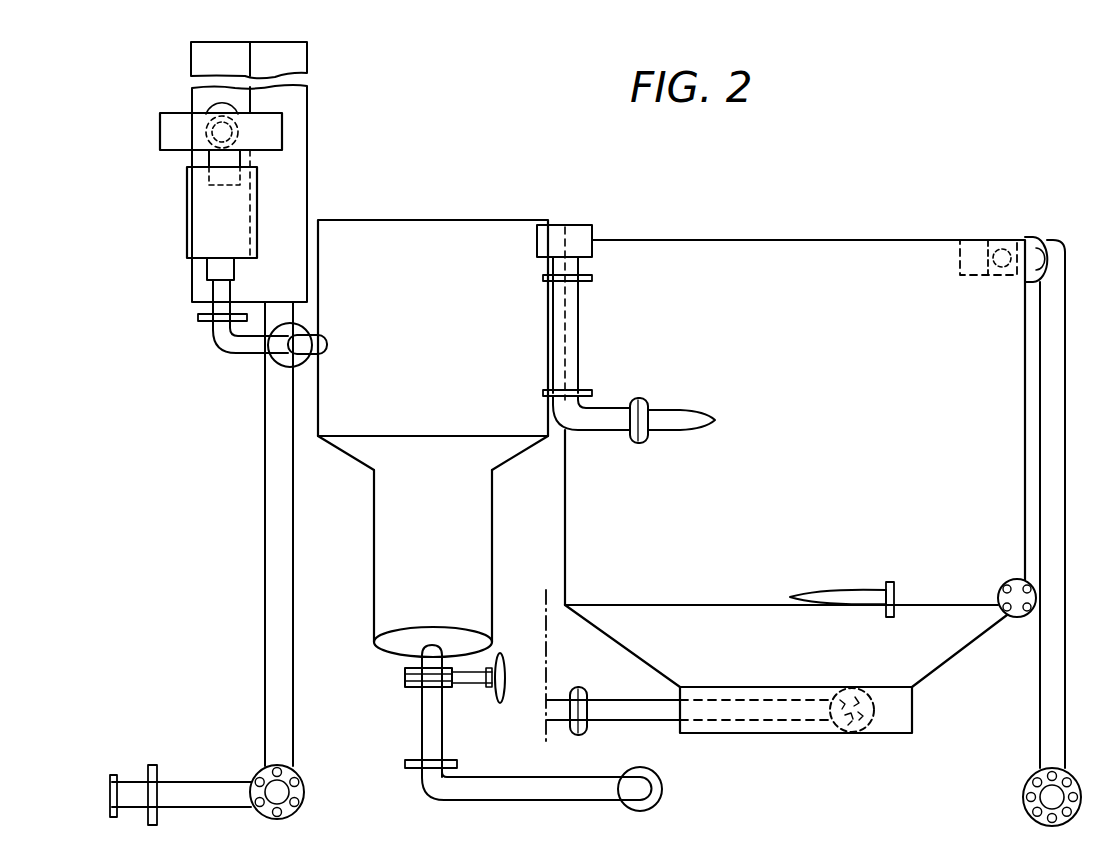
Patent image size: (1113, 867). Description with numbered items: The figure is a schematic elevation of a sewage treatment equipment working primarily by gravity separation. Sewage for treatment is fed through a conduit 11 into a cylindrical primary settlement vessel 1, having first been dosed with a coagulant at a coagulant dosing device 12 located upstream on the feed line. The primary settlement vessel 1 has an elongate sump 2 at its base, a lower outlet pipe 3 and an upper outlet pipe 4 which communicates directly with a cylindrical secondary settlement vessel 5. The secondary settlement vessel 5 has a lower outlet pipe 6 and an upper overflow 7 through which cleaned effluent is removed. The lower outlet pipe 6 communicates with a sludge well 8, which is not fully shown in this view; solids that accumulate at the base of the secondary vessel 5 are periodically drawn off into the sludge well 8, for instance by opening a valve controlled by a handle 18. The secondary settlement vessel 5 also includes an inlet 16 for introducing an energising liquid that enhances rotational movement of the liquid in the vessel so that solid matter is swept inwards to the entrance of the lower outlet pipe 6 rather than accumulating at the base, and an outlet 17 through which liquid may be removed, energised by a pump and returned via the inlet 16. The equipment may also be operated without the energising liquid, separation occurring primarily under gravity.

The primary settlement vessel 1 is at (458, 214).
The sump 2 is at (374, 548).
The lower outlet pipe 3 is at (447, 794).
The upper outlet pipe 4 is at (582, 338).
The secondary settlement vessel 5 is at (843, 236).
The lower outlet pipe 6 is at (657, 712).
The upper overflow 7 is at (1043, 238).
The sludge well 8 is at (512, 777).
The conduit 11 is at (213, 293).
The coagulant dosing device 12 is at (175, 128).
The inlet 16 is at (1030, 598).
The outlet 17 is at (895, 582).
The handle 18 is at (855, 722).